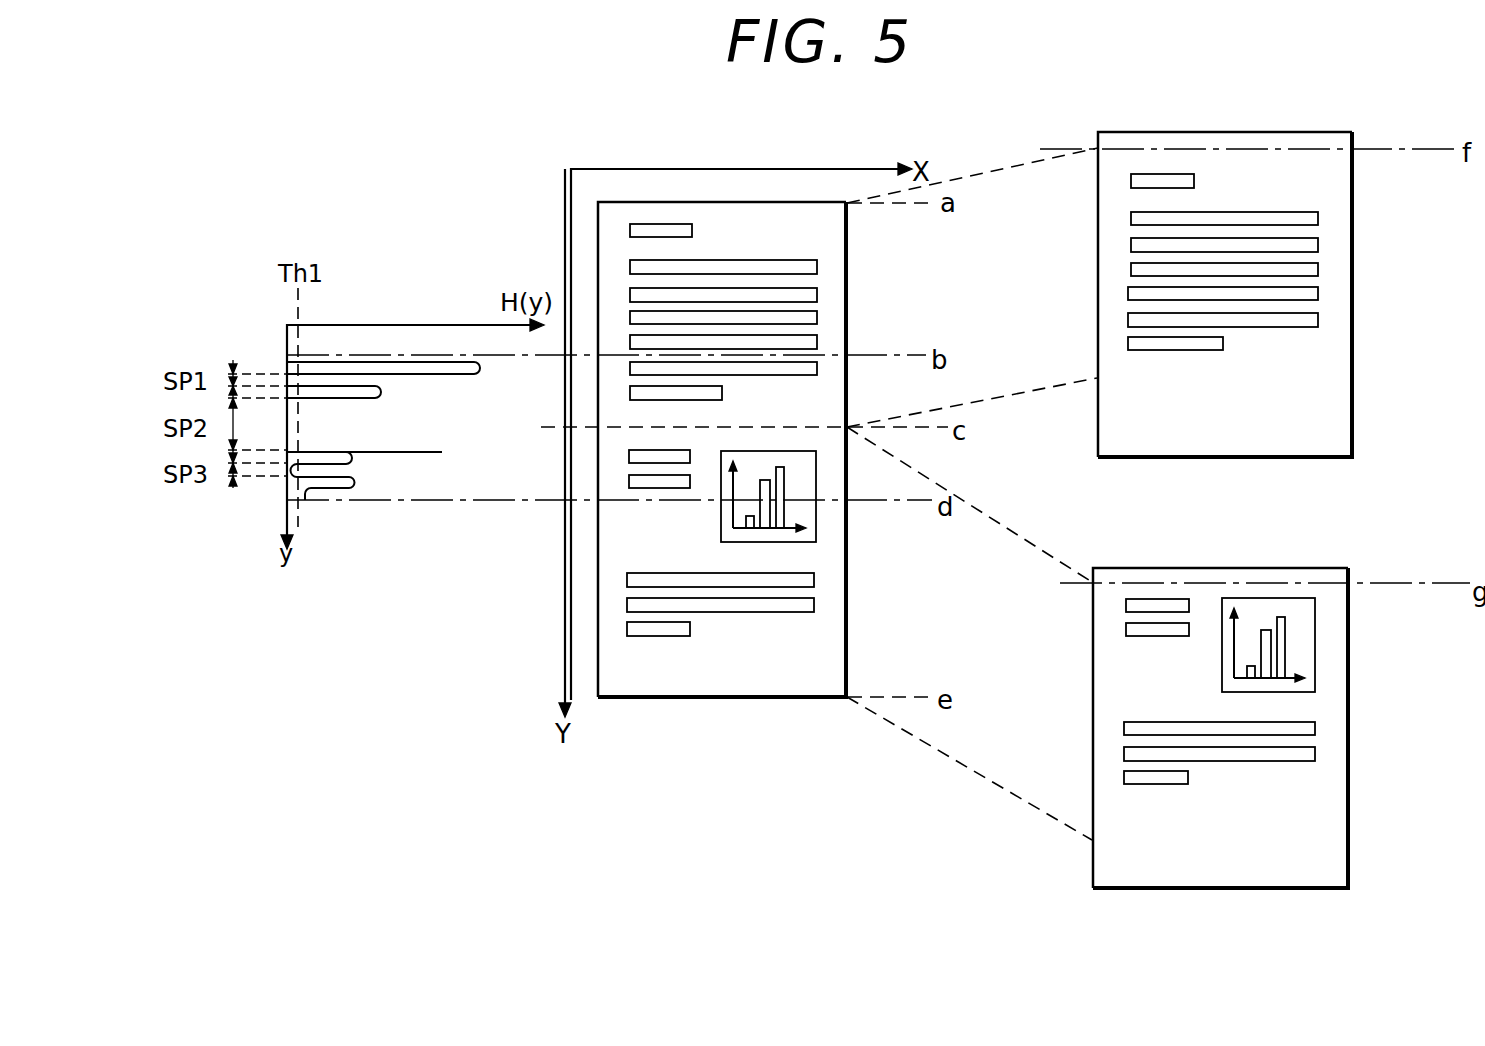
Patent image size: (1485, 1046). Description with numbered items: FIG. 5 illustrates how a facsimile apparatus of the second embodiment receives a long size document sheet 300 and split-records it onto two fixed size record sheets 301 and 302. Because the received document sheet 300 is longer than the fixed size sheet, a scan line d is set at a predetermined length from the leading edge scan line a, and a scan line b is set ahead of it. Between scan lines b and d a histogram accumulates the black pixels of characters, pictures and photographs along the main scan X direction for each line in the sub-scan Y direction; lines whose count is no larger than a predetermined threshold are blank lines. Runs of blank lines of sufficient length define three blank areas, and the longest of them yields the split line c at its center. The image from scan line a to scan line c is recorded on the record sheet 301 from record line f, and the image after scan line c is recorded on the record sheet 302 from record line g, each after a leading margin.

The received document sheet 300 is at (779, 202).
The record sheet 301 is at (1260, 132).
The record sheet 302 is at (1270, 568).